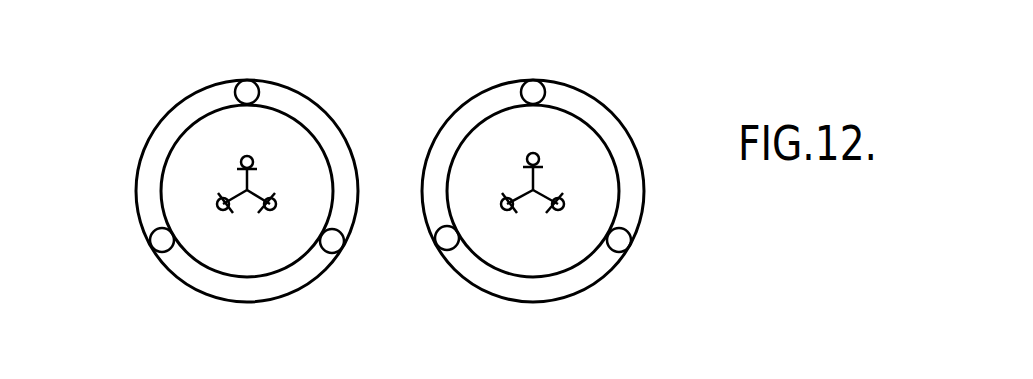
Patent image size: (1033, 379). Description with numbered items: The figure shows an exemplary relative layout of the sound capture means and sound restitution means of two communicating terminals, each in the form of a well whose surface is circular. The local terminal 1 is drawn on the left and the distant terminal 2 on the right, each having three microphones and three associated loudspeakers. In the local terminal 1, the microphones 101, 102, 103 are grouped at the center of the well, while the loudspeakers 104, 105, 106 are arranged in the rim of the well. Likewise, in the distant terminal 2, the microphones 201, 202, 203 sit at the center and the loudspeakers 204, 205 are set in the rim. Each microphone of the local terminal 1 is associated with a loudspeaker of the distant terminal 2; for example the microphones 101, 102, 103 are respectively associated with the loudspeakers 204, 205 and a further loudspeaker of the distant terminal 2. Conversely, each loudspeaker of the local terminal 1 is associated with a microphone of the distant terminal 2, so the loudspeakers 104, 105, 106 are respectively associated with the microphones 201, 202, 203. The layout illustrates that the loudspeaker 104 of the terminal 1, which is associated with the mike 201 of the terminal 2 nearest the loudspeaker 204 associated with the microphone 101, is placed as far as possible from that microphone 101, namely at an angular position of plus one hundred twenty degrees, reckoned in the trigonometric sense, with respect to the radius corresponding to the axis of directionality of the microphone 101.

The local terminal 1 is at (360, 322).
The distant terminal 2 is at (642, 323).
The microphone 101 is at (250, 157).
The microphone 102 is at (219, 201).
The microphone 103 is at (275, 200).
The loudspeaker 104 is at (340, 251).
The loudspeaker 105 is at (152, 248).
The loudspeaker 106 is at (240, 82).
The microphone 201 is at (539, 157).
The microphone 202 is at (564, 204).
The microphone 203 is at (506, 198).
The loudspeaker 204 is at (538, 81).
The loudspeaker 205 is at (630, 246).